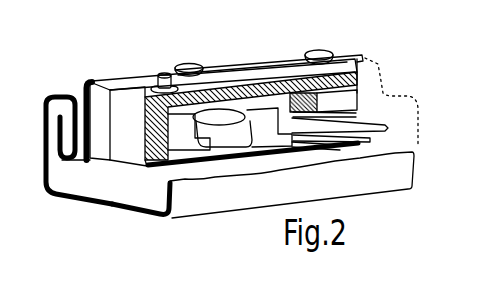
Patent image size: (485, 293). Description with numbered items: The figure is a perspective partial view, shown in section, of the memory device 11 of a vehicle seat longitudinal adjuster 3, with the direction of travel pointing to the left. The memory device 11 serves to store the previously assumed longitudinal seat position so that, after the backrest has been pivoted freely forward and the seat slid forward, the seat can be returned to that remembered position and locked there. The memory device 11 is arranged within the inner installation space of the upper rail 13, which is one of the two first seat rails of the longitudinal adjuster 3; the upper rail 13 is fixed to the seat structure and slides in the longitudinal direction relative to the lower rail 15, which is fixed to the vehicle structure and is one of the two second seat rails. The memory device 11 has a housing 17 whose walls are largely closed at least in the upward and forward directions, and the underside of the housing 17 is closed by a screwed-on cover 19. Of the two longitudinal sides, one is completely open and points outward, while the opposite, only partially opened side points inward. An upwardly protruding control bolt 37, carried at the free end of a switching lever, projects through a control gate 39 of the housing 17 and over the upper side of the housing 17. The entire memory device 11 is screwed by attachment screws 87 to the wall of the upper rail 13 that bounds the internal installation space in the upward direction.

The longitudinal adjuster 3 is at (76, 204).
The memory device 11 is at (366, 71).
The upper rail 13 is at (82, 80).
The lower rail 15 is at (136, 214).
The housing 17 is at (125, 123).
The cover 19 is at (125, 168).
The control bolt 37 is at (165, 80).
The control gate 39 is at (147, 88).
The attachment screws 87 is at (200, 63).